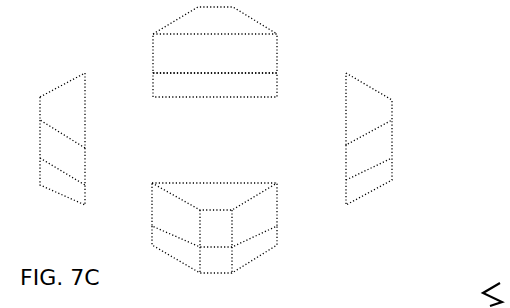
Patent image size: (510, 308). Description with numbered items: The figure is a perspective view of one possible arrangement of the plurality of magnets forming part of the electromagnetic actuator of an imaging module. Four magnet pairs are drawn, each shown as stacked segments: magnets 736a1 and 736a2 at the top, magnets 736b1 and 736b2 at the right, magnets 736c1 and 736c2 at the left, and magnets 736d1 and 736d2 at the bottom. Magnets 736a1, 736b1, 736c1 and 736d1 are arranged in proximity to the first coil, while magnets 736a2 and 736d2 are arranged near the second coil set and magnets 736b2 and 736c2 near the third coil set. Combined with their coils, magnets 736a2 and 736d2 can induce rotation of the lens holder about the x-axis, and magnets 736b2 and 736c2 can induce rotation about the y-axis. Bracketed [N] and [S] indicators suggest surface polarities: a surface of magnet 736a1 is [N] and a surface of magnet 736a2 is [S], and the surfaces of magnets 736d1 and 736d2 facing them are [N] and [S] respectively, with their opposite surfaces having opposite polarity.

The magnet 736a1 is at (238, 65).
The magnet 736a2 is at (278, 78).
The magnet 736b1 is at (385, 104).
The magnet 736b2 is at (392, 164).
The magnet 736c1 is at (83, 132).
The magnet 736c2 is at (73, 183).
The magnet 736d1 is at (237, 183).
The magnet 736d2 is at (262, 242).